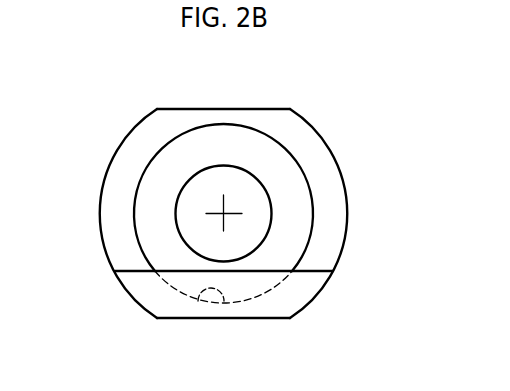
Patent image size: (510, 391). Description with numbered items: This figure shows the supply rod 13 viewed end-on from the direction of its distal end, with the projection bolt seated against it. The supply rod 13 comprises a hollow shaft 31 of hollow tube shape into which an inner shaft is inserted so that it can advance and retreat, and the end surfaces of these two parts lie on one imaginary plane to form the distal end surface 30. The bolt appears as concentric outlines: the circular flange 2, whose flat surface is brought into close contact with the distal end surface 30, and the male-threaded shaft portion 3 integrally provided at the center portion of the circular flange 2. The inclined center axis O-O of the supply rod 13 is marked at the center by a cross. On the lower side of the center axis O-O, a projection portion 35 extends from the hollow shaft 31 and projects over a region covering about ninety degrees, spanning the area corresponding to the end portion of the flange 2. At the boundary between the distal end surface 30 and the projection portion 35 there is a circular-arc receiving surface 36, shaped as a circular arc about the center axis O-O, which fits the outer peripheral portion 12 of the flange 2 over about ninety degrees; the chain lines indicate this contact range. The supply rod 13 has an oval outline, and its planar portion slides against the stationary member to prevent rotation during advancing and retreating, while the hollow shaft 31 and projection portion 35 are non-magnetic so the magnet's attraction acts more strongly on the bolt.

The supply rod 13 is at (182, 100).
The distal end surface 30 is at (132, 152).
The hollow shaft 31 is at (348, 223).
The circular flange 2 is at (150, 200).
The shaft portion 3 is at (195, 228).
The center axis O-O is at (224, 214).
The projection portion 35 is at (178, 303).
The outer peripheral portion 12 is at (268, 292).
The circular-arc receiving surface 36 is at (223, 302).